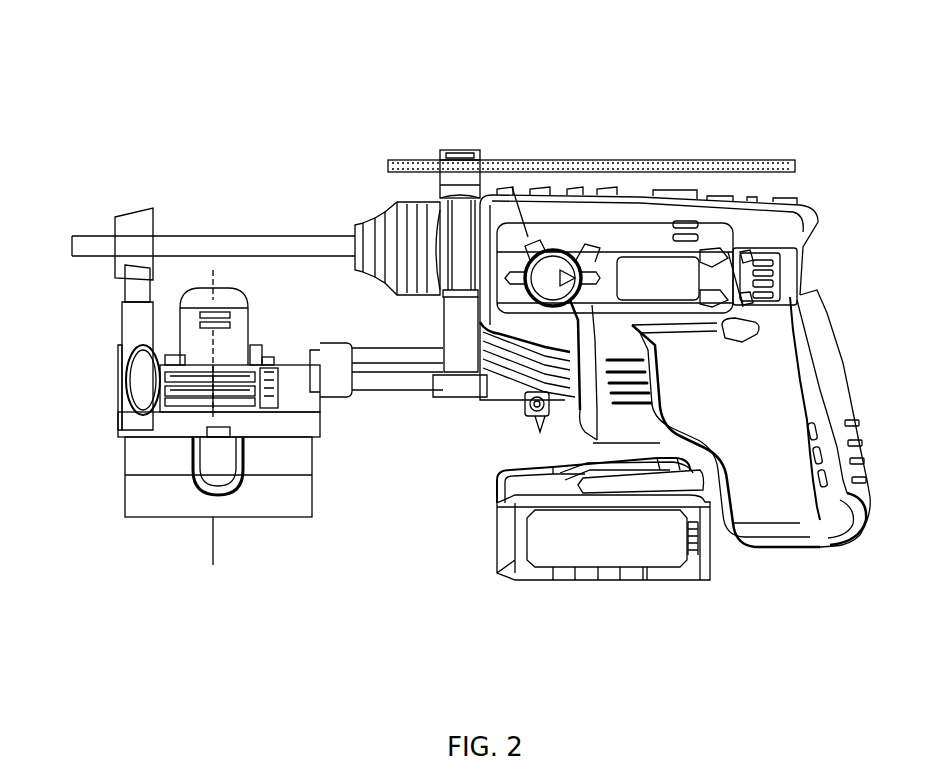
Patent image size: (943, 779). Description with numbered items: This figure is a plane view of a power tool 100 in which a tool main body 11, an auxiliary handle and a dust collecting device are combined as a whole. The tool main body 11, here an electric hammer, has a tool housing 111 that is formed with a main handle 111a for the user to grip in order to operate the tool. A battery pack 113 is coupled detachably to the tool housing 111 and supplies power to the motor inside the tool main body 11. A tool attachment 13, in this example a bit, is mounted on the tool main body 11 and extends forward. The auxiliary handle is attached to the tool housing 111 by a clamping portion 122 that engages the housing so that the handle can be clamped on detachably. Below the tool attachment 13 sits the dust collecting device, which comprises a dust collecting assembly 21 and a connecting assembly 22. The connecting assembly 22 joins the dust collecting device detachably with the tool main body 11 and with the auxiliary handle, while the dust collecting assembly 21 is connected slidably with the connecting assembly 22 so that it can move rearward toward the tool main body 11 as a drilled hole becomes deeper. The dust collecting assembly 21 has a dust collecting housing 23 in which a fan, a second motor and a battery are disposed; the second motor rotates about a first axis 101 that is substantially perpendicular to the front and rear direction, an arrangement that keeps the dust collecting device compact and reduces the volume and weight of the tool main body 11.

The power tool 100 is at (325, 103).
The tool main body 11 is at (818, 196).
The tool housing 111 is at (800, 268).
The main handle 111a is at (832, 375).
The battery pack 113 is at (540, 548).
The clamping portion 122 is at (460, 156).
The tool attachment 13 is at (100, 243).
The dust collecting assembly 21 is at (145, 478).
The connecting assembly 22 is at (455, 382).
The dust collecting housing 23 is at (130, 423).
The first axis 101 is at (210, 540).